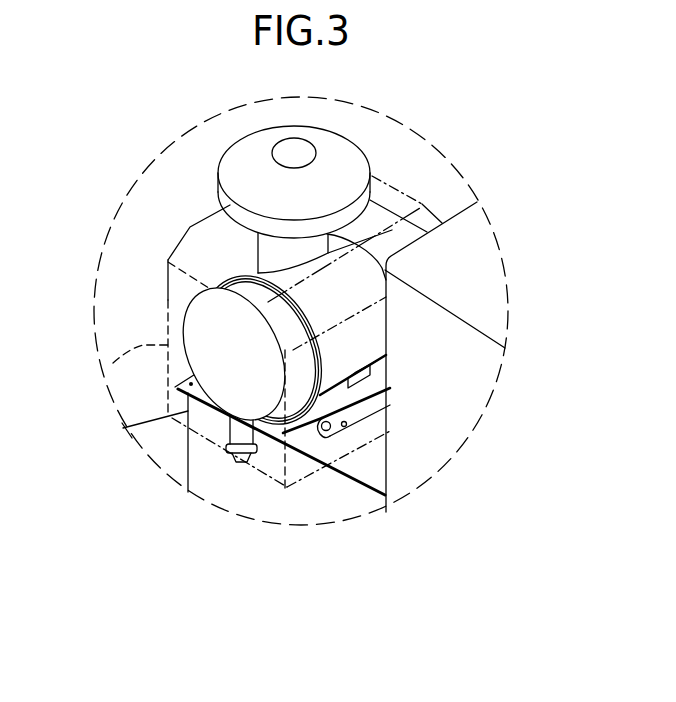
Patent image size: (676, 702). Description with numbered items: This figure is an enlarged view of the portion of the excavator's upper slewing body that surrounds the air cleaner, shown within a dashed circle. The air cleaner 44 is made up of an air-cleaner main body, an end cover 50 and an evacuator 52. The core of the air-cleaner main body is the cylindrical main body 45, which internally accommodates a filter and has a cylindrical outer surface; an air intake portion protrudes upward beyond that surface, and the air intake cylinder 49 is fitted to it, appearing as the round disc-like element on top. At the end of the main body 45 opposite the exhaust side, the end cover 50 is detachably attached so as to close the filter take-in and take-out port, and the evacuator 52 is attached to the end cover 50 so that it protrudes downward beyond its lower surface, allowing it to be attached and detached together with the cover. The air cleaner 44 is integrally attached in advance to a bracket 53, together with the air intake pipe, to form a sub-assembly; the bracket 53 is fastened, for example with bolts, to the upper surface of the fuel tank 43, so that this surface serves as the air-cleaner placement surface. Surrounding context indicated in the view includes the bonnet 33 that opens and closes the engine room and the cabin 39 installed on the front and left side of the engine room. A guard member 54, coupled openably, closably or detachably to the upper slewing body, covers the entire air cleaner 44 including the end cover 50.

The bonnet 33 is at (193, 143).
The cabin 39 is at (497, 250).
The fuel tank 43 is at (312, 510).
The air cleaner 44 is at (245, 260).
The main body 45 is at (386, 327).
The air intake cylinder 49 is at (357, 152).
The end cover 50 is at (196, 305).
The evacuator 52 is at (226, 434).
The bracket 53 is at (376, 414).
The guard member 54 is at (105, 377).